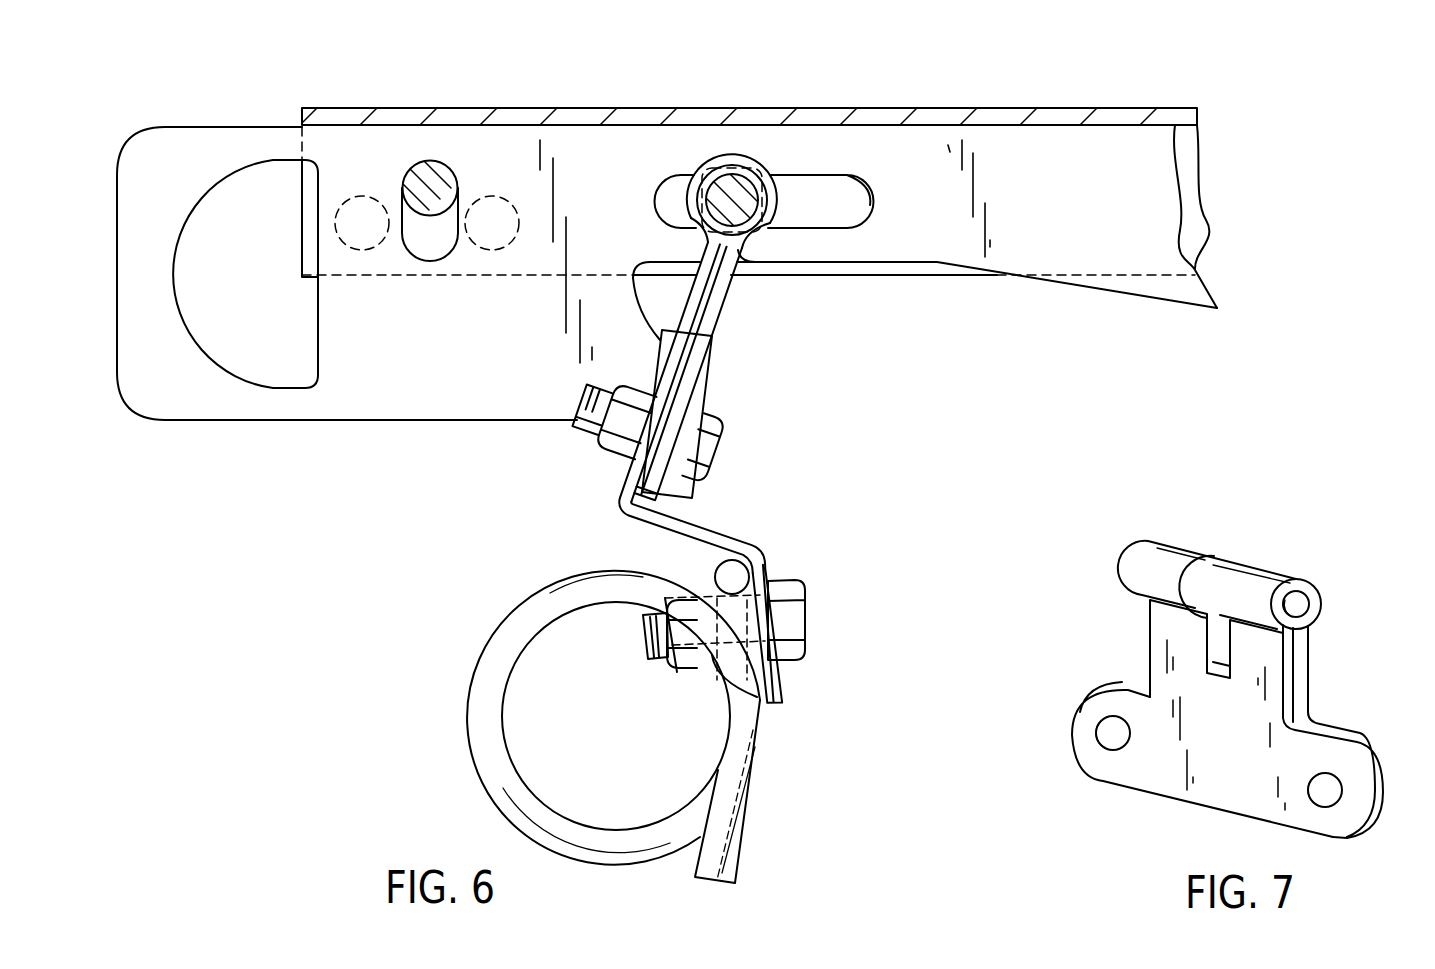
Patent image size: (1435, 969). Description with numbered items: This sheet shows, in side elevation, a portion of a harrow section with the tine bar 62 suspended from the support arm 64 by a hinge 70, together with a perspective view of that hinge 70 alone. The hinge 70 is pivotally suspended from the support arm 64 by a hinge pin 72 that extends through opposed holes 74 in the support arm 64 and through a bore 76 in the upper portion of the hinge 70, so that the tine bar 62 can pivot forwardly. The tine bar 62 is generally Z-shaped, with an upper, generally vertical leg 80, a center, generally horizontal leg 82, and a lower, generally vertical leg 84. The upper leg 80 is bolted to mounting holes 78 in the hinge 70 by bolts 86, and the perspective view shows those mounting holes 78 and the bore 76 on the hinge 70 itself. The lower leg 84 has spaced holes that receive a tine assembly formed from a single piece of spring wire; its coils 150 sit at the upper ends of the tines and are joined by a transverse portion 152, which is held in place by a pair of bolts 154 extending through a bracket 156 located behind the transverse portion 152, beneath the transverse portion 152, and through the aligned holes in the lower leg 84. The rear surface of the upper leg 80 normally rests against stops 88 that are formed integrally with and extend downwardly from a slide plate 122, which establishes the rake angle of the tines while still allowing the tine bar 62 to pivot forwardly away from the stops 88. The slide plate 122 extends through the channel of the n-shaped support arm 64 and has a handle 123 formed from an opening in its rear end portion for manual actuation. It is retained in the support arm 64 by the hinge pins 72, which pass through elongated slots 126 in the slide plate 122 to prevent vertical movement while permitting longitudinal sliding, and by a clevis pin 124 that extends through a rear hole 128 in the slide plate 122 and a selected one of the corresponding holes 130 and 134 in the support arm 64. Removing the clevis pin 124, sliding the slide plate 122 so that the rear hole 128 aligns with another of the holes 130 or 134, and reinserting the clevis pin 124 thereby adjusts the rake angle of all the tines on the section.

In FIG. 6, the tine bar 62 is at (742, 535).
In FIG. 6, the support arm 64 is at (955, 108).
In FIG. 6, the hinge 70 is at (722, 290).
In FIG. 7, the hinge 70 is at (1292, 538).
In FIG. 6, the hinge pin 72 is at (722, 180).
In FIG. 6, the holes 74 is at (752, 165).
In FIG. 6, the bore 76 is at (715, 203).
In FIG. 7, the bore 76 is at (1300, 605).
In FIG. 6, the mounting holes 78 is at (600, 442).
In FIG. 7, the mounting holes 78 is at (1100, 733).
In FIG. 6, the upper leg 80 is at (620, 478).
In FIG. 6, the center leg 82 is at (697, 527).
In FIG. 6, the lower leg 84 is at (783, 680).
In FIG. 6, the bolts 86 is at (722, 448).
In FIG. 6, the stops 88 is at (675, 352).
In FIG. 6, the slide plate 122 is at (587, 143).
In FIG. 6, the handle 123 is at (266, 375).
In FIG. 6, the clevis pin 124 is at (425, 168).
In FIG. 6, the elongated slots 126 is at (873, 198).
In FIG. 6, the rear hole 128 is at (425, 250).
In FIG. 6, the hole 130 is at (365, 240).
In FIG. 6, the hole 134 is at (497, 243).
In FIG. 6, the coils 150 is at (472, 725).
In FIG. 6, the transverse portion 152 is at (735, 575).
In FIG. 6, the bolts 154 is at (803, 618).
In FIG. 6, the bracket 156 is at (717, 687).